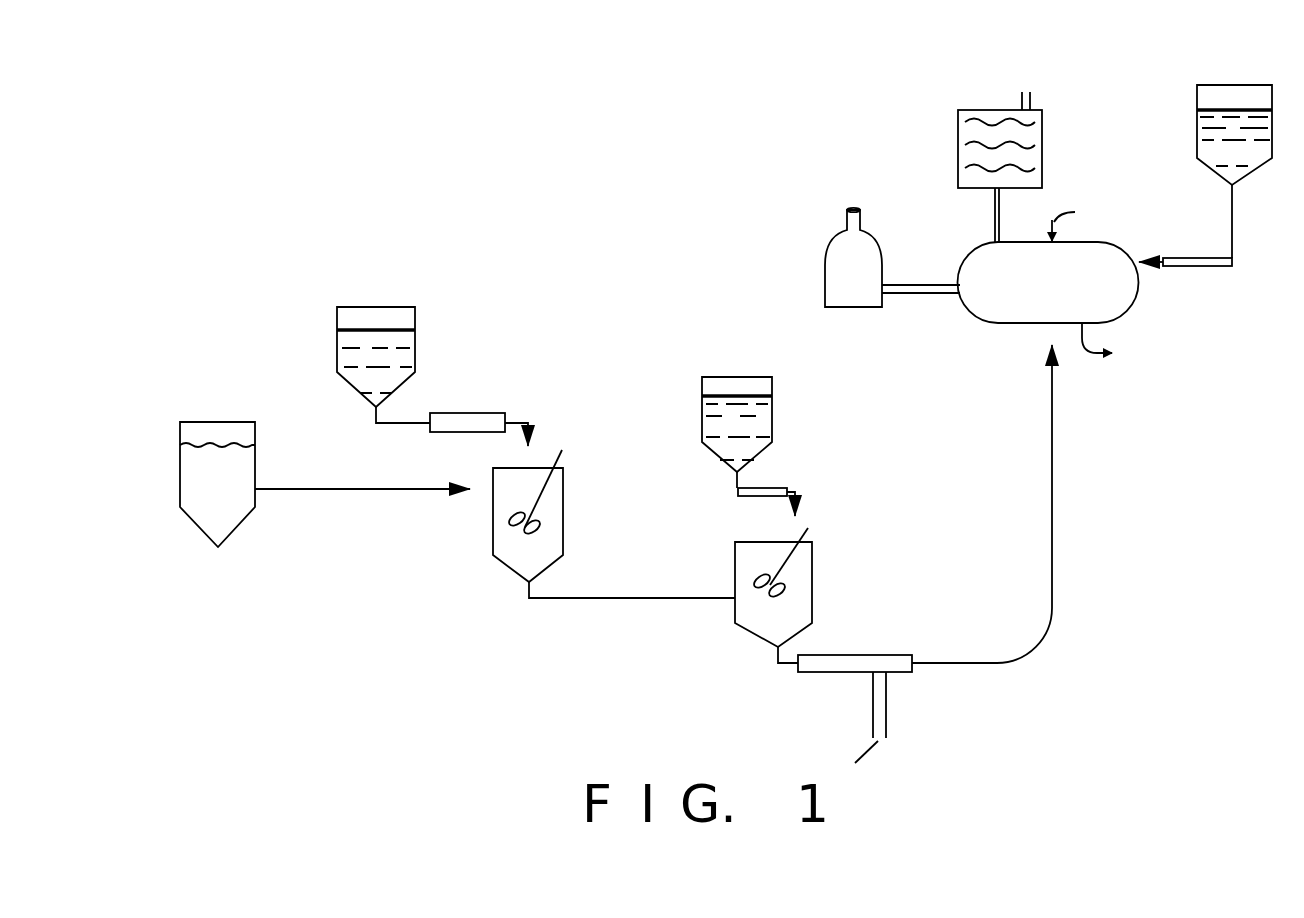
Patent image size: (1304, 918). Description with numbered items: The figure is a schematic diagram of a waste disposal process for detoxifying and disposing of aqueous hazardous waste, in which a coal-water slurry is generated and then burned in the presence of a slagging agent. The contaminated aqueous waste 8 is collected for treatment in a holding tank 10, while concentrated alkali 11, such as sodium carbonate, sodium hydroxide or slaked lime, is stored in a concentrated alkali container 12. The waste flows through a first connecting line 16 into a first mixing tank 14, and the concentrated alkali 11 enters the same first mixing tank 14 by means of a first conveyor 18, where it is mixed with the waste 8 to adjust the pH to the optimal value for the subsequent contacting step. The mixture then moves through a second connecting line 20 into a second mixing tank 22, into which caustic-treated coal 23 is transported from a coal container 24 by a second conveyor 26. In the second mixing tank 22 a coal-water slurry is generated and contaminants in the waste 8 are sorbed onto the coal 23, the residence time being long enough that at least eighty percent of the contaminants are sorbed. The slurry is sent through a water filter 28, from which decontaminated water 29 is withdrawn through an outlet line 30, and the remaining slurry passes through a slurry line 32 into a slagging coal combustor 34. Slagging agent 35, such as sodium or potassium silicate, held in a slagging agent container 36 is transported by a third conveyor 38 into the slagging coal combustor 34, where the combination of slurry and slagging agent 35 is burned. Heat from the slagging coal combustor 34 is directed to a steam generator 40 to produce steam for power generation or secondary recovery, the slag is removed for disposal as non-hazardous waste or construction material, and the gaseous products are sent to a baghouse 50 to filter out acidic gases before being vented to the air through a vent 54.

The contaminated aqueous waste 8 is at (220, 460).
The holding tank 10 is at (173, 477).
The concentrated alkali 11 is at (390, 340).
The concentrated alkali container 12 is at (337, 336).
The first mixing tank 14 is at (507, 540).
The first connecting line 16 is at (357, 493).
The first conveyor 18 is at (482, 417).
The second connecting line 20 is at (635, 600).
The second mixing tank 22 is at (752, 617).
The caustic-treated coal 23 is at (748, 410).
The coal container 24 is at (702, 408).
The second conveyor 26 is at (770, 483).
The water filter 28 is at (820, 665).
The decontaminated water 29 is at (872, 752).
The outlet line 30 is at (887, 702).
The slurry line 32 is at (1053, 578).
The slagging coal combustor 34 is at (995, 307).
The slagging agent 35 is at (1252, 120).
The slagging agent container 36 is at (1197, 125).
The third conveyor 38 is at (1200, 266).
The steam generator 40 is at (838, 258).
The baghouse 50 is at (968, 140).
The vent 54 is at (1032, 100).